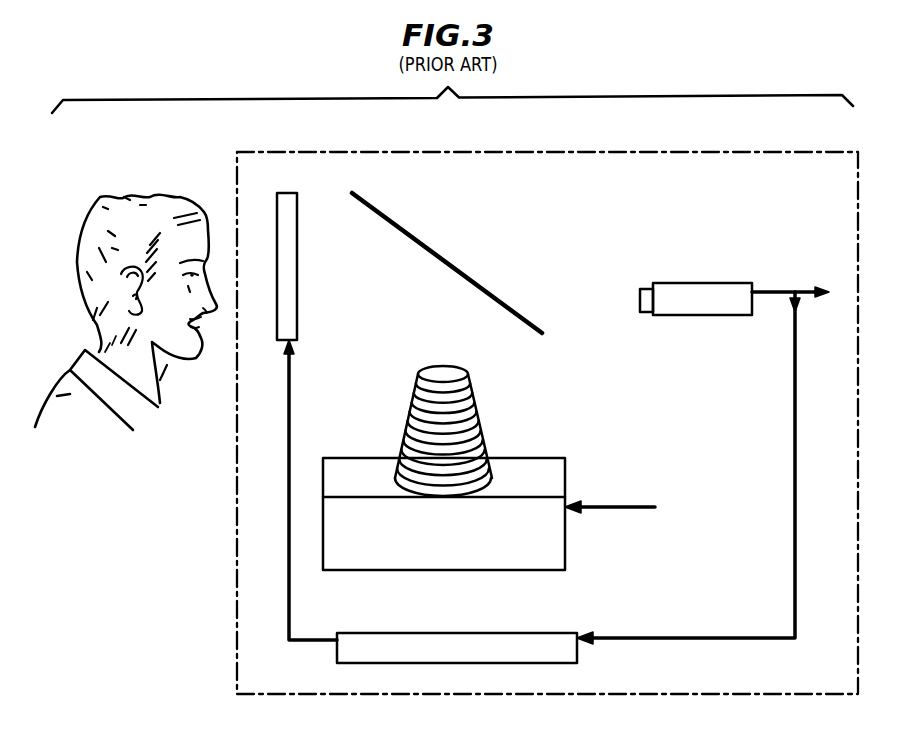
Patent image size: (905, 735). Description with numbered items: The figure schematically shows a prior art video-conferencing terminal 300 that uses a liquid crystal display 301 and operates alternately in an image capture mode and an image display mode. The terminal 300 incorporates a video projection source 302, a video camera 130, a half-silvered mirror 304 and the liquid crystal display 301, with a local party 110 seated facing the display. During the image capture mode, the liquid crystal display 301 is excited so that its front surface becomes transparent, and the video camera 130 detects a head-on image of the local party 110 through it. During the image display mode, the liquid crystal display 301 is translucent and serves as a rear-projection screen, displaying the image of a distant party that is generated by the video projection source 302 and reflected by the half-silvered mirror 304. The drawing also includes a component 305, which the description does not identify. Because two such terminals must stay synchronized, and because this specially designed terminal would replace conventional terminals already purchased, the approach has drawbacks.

The local party 110 is at (108, 190).
The video-conferencing terminal 300 is at (624, 152).
The liquid crystal display 301 is at (288, 193).
The half-silvered mirror 304 is at (445, 258).
The video camera 130 is at (688, 283).
The video projection source 302 is at (515, 485).
The controller / processing unit 305 is at (368, 632).